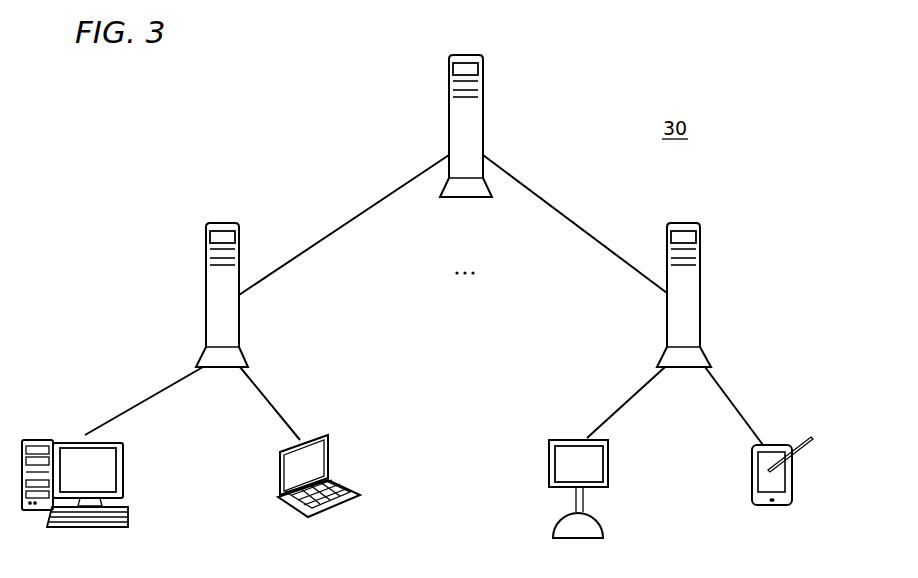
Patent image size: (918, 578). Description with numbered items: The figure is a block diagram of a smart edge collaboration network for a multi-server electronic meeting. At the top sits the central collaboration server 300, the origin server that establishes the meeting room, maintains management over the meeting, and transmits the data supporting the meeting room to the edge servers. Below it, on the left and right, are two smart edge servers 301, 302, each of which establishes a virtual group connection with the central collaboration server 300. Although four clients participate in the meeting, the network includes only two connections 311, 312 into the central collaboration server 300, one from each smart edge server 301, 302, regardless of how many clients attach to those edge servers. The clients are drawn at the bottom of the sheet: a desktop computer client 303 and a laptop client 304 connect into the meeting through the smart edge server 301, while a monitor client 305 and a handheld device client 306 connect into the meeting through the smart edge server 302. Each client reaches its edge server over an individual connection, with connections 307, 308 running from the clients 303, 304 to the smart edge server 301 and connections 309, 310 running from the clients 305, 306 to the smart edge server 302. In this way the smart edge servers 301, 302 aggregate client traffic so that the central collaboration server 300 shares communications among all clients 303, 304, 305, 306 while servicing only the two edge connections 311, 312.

The central collaboration server 300 is at (449, 73).
The smart edge server 301 is at (206, 240).
The smart edge server 302 is at (700, 240).
The client 303 is at (123, 468).
The client 304 is at (328, 452).
The client 305 is at (608, 457).
The client 306 is at (752, 490).
The connection 307 is at (132, 408).
The connection 308 is at (270, 403).
The connection 309 is at (625, 403).
The connection 310 is at (722, 391).
The connection 311 is at (357, 216).
The connection 312 is at (558, 211).